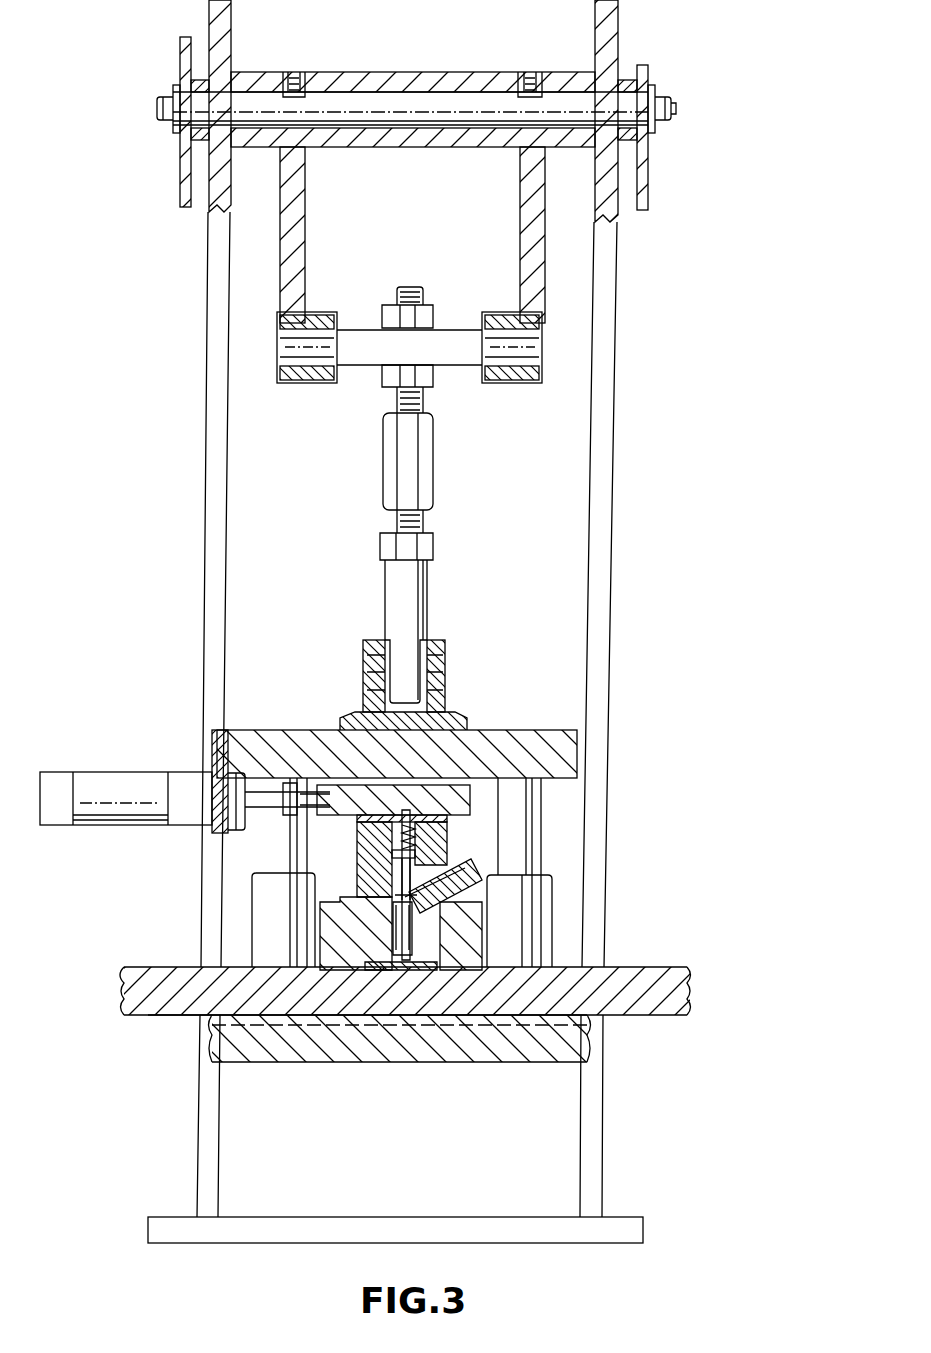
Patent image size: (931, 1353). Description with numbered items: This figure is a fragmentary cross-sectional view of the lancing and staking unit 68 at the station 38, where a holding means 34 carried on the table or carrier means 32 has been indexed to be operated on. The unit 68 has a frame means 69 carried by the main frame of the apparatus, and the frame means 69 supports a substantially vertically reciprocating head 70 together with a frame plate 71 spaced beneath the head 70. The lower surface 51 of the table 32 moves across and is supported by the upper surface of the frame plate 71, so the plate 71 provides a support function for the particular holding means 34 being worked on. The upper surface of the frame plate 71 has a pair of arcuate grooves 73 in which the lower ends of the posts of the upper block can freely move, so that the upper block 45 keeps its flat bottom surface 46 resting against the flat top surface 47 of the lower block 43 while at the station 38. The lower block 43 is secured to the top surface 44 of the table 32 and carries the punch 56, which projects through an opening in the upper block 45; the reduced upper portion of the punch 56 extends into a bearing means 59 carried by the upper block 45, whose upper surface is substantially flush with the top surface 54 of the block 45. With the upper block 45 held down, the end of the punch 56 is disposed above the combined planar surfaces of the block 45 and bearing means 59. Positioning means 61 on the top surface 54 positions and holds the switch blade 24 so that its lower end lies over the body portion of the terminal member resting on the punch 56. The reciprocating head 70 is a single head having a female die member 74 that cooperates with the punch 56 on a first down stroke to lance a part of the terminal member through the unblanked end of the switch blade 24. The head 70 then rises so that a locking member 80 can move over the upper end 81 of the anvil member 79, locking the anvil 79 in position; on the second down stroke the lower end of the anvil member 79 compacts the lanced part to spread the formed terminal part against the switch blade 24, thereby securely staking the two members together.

The lancing and staking unit 68 is at (697, 183).
The frame means 69 is at (612, 385).
The upper end of anvil member 81 is at (400, 790).
The locking member 80 is at (490, 782).
The reciprocating head 70 is at (482, 790).
The female die member 74 is at (330, 870).
The holding means 34 is at (483, 857).
The anvil member 79 is at (398, 880).
The switch blade 24 is at (460, 866).
The top surface of upper block 54 is at (480, 878).
The positioning means 61 is at (478, 870).
The bottom surface of upper block 46 is at (330, 930).
The top surface of lower block 47 is at (330, 925).
The punch 56 is at (519, 921).
The station 38 is at (633, 868).
The first block or lower block 43 is at (470, 955).
The second block or upper block 45 is at (473, 922).
The bearing means 59 is at (397, 903).
The table or carrier means 32 is at (153, 967).
The top surface of table 44 is at (663, 970).
The frame plate 71 is at (505, 1053).
The arcuate grooves 73 is at (322, 1030).
The lower surface of table 51 is at (165, 1015).